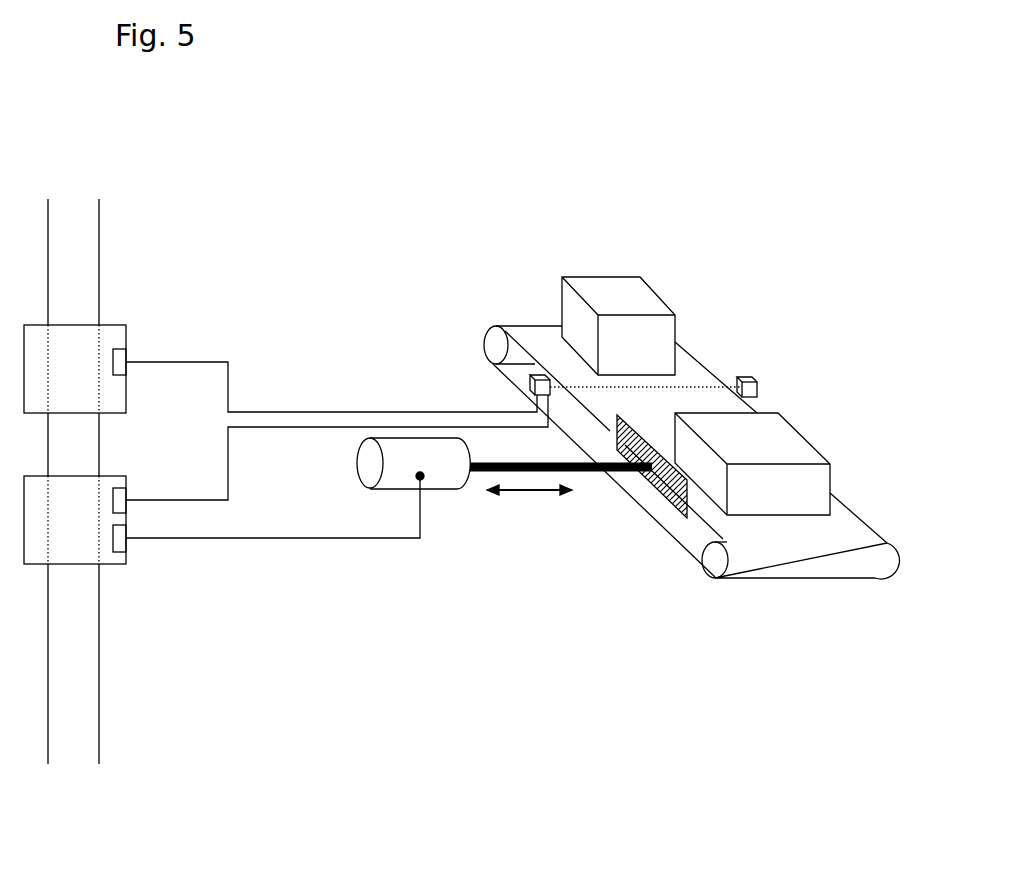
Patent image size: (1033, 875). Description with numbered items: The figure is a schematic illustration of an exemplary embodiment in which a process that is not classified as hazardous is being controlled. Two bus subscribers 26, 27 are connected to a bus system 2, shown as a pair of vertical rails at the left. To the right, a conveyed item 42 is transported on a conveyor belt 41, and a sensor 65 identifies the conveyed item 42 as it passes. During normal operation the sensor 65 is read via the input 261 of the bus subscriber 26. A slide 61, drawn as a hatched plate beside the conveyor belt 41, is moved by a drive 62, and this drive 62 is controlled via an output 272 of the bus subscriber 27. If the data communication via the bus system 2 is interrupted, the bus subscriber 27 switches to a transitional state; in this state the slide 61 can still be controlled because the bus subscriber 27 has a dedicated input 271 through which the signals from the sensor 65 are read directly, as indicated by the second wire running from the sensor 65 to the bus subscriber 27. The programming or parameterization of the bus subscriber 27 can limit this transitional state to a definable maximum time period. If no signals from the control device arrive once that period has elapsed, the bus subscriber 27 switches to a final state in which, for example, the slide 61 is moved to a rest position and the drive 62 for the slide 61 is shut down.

The bus system 2 is at (99, 713).
The bus subscriber 26 is at (113, 325).
The input 261 is at (118, 350).
The bus subscriber 27 is at (113, 568).
The input 271 is at (125, 487).
The output 272 is at (122, 553).
The conveyor belt 41 is at (727, 527).
The conveyed item 42 is at (587, 277).
The slide 61 is at (650, 482).
The drive 62 is at (430, 490).
The sensor 65 is at (530, 380).